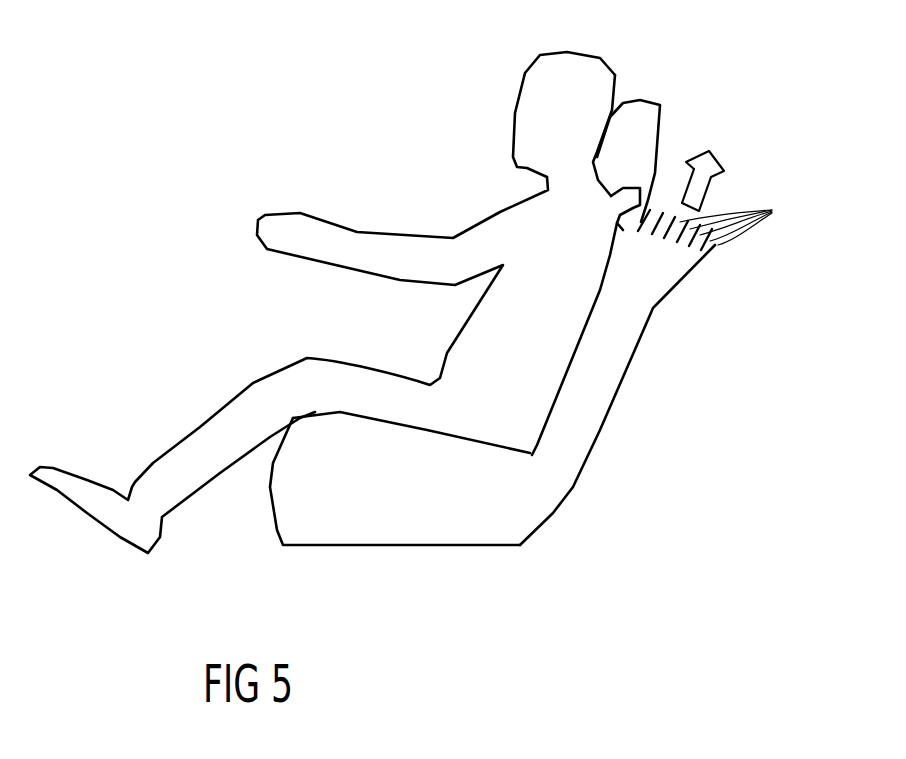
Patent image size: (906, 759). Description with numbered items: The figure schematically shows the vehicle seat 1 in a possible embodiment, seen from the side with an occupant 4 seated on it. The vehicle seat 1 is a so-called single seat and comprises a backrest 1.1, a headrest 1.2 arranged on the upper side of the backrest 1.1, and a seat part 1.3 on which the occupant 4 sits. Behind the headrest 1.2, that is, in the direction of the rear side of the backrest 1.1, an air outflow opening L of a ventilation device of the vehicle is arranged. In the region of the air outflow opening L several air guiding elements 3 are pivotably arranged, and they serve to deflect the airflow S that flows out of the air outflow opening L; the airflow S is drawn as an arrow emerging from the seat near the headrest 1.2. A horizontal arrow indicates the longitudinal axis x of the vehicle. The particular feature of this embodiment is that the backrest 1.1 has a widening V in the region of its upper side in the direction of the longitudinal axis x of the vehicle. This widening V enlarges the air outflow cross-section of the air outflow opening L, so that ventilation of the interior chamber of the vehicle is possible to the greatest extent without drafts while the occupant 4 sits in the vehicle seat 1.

The vehicle seat 1 is at (501, 324).
The backrest 1.1 is at (630, 332).
The headrest 1.2 is at (635, 118).
The seat part 1.3 is at (385, 520).
The air guiding elements 3 is at (736, 222).
The occupant 4 is at (482, 345).
The airflow S is at (710, 150).
The air outflow opening L is at (718, 196).
The widening V is at (706, 268).
The longitudinal axis of the vehicle x is at (275, 30).